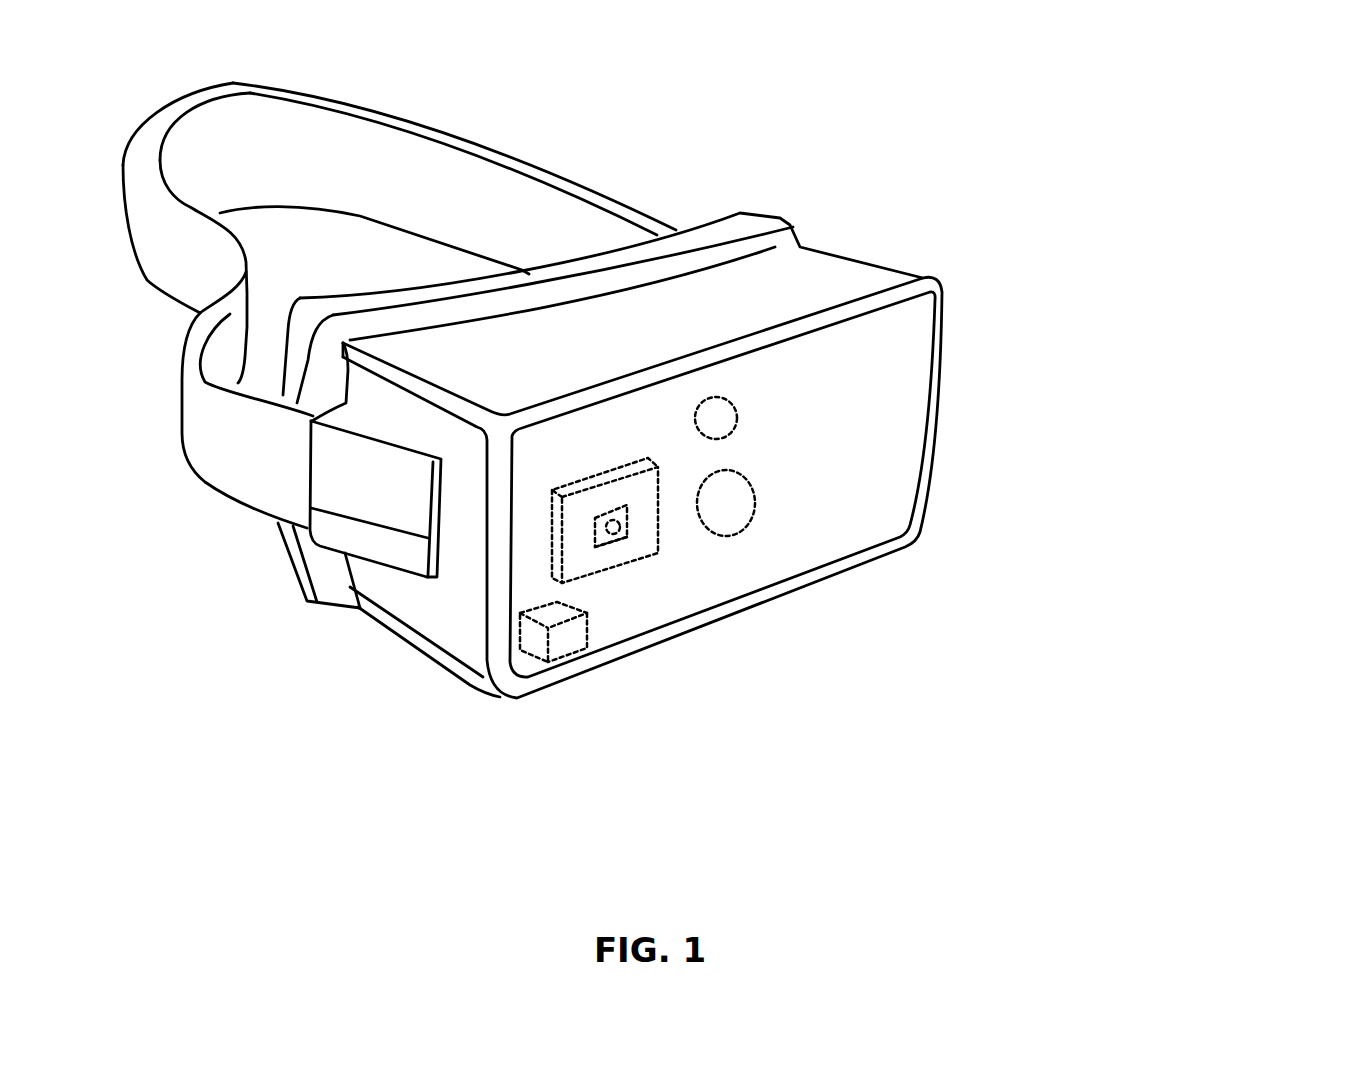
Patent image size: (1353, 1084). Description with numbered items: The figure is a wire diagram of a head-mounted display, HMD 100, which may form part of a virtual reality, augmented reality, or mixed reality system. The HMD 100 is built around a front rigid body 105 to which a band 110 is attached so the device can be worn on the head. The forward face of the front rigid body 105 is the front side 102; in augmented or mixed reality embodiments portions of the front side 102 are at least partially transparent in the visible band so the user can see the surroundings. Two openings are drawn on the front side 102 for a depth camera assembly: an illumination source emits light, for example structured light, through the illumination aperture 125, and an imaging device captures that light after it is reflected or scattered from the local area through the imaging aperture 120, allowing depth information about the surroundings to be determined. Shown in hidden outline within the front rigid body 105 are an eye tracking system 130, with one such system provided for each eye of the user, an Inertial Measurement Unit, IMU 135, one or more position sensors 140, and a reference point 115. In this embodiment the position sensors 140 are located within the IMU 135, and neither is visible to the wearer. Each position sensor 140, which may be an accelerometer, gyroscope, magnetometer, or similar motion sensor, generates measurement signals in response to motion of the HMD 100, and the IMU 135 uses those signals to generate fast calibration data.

The HMD 100 is at (1038, 64).
The front side 102 is at (837, 472).
The front rigid body 105 is at (779, 427).
The band 110 is at (540, 168).
The reference point 115 is at (612, 533).
The imaging aperture 120 is at (754, 505).
The illumination aperture 125 is at (733, 402).
The eye tracking system 130 is at (565, 637).
The Inertial Measurement Unit (IMU) 135 is at (660, 540).
The position sensor 140 is at (598, 543).